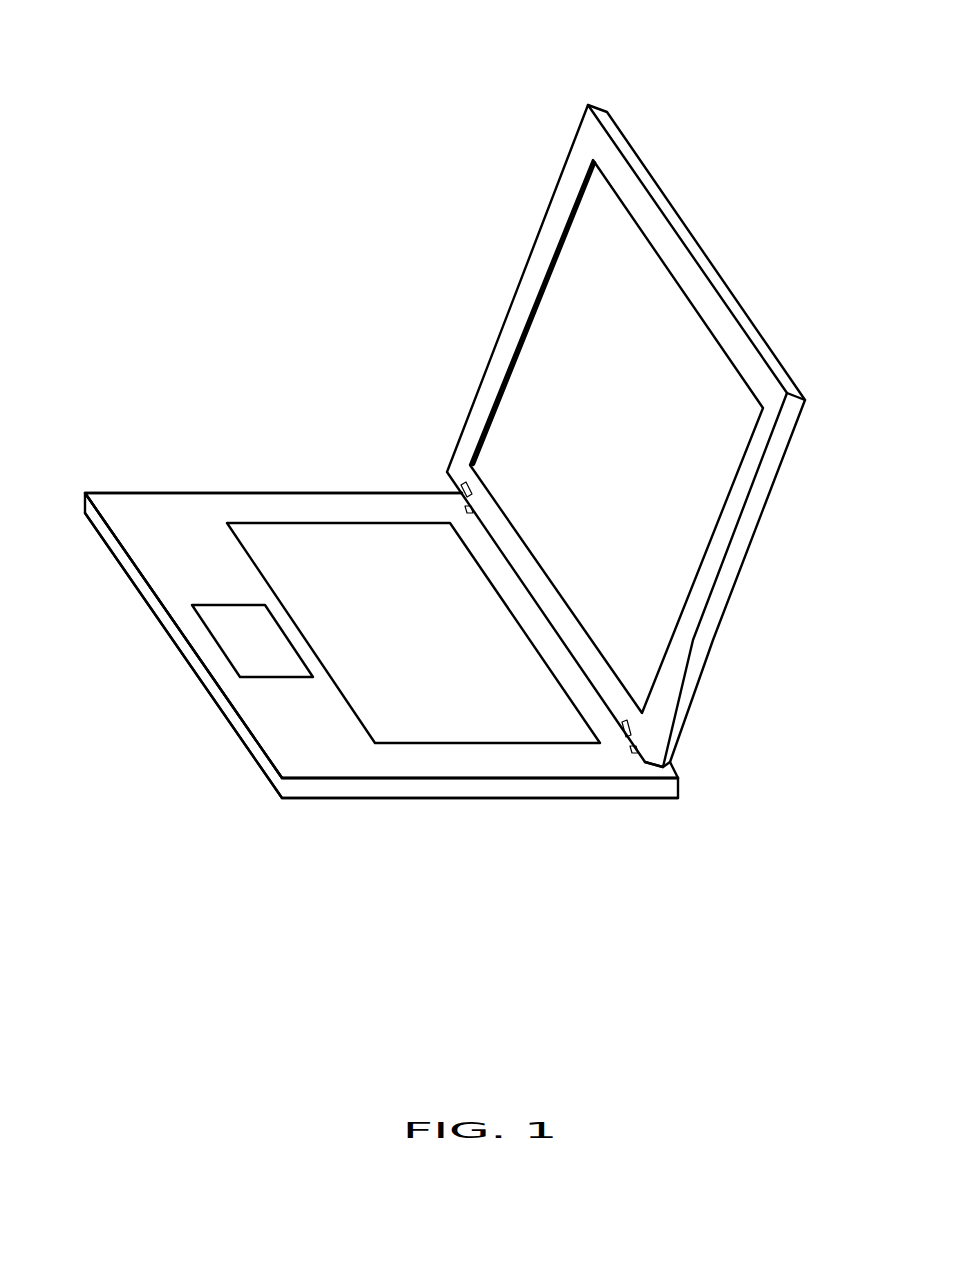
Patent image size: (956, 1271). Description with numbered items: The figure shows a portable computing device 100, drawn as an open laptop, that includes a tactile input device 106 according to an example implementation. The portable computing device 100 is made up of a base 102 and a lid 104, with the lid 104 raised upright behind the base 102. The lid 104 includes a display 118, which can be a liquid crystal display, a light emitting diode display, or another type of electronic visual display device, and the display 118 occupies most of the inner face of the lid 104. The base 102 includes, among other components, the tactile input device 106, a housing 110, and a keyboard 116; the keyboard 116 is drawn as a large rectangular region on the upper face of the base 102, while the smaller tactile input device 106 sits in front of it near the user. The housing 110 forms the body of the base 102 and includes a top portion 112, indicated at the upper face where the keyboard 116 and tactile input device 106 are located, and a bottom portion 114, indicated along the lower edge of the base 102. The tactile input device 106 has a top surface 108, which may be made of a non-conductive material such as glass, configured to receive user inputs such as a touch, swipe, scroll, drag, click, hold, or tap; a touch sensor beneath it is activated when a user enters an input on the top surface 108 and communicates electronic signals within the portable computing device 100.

The portable computing device 100 is at (250, 180).
The base 102 is at (202, 492).
The lid 104 is at (535, 238).
The tactile input device 106 is at (228, 662).
The top surface 108 is at (198, 622).
The housing 110 is at (137, 535).
The top portion 112 is at (346, 768).
The bottom portion 114 is at (612, 806).
The keyboard 116 is at (335, 543).
The display 118 is at (700, 378).